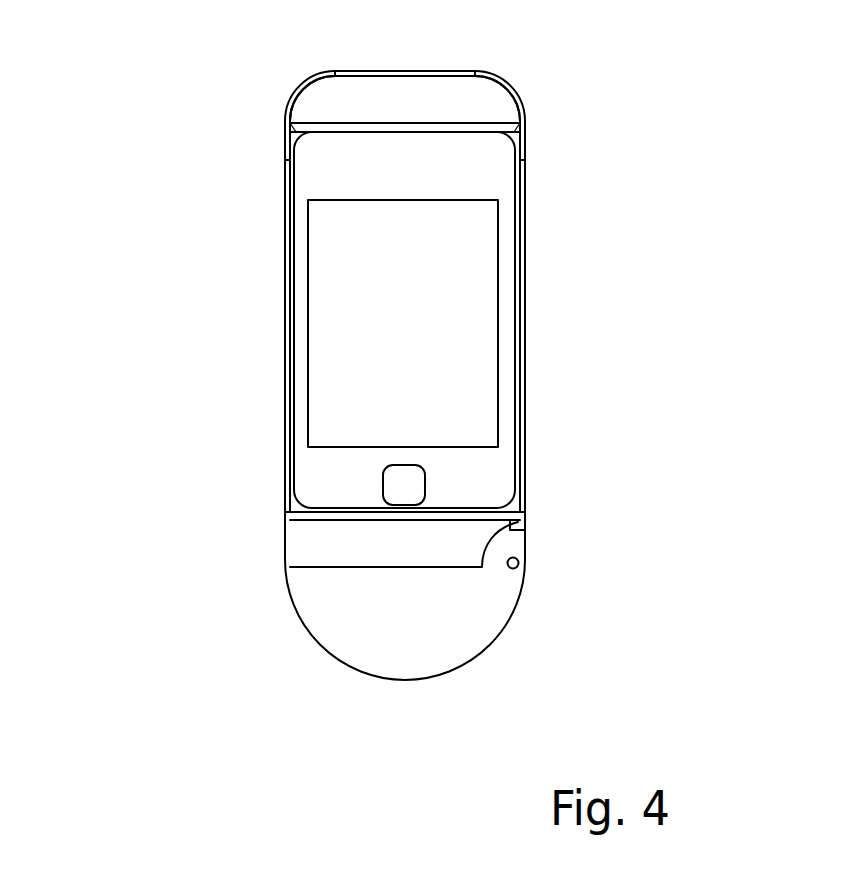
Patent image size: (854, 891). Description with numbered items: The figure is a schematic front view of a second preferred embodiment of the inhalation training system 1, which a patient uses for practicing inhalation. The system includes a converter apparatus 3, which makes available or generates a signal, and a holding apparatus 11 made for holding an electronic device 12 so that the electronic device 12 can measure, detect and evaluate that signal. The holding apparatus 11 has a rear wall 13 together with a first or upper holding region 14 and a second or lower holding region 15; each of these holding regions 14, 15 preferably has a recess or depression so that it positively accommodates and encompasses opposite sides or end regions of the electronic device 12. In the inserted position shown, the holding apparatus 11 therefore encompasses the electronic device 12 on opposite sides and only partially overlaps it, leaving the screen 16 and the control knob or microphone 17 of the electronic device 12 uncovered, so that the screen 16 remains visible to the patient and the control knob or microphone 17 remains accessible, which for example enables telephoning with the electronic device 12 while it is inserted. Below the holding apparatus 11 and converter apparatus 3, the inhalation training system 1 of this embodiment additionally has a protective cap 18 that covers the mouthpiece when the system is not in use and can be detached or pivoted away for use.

The inhalation training system 1 is at (220, 82).
The converter apparatus 3 is at (311, 545).
The holding apparatus 11 is at (260, 372).
The electronic device 12 is at (533, 228).
The rear wall 13 is at (523, 138).
The first or upper holding region 14 is at (477, 122).
The second or lower holding region 15 is at (495, 520).
The screen 16 is at (323, 252).
The control knob or microphone 17 is at (388, 482).
The protective cap 18 is at (343, 608).